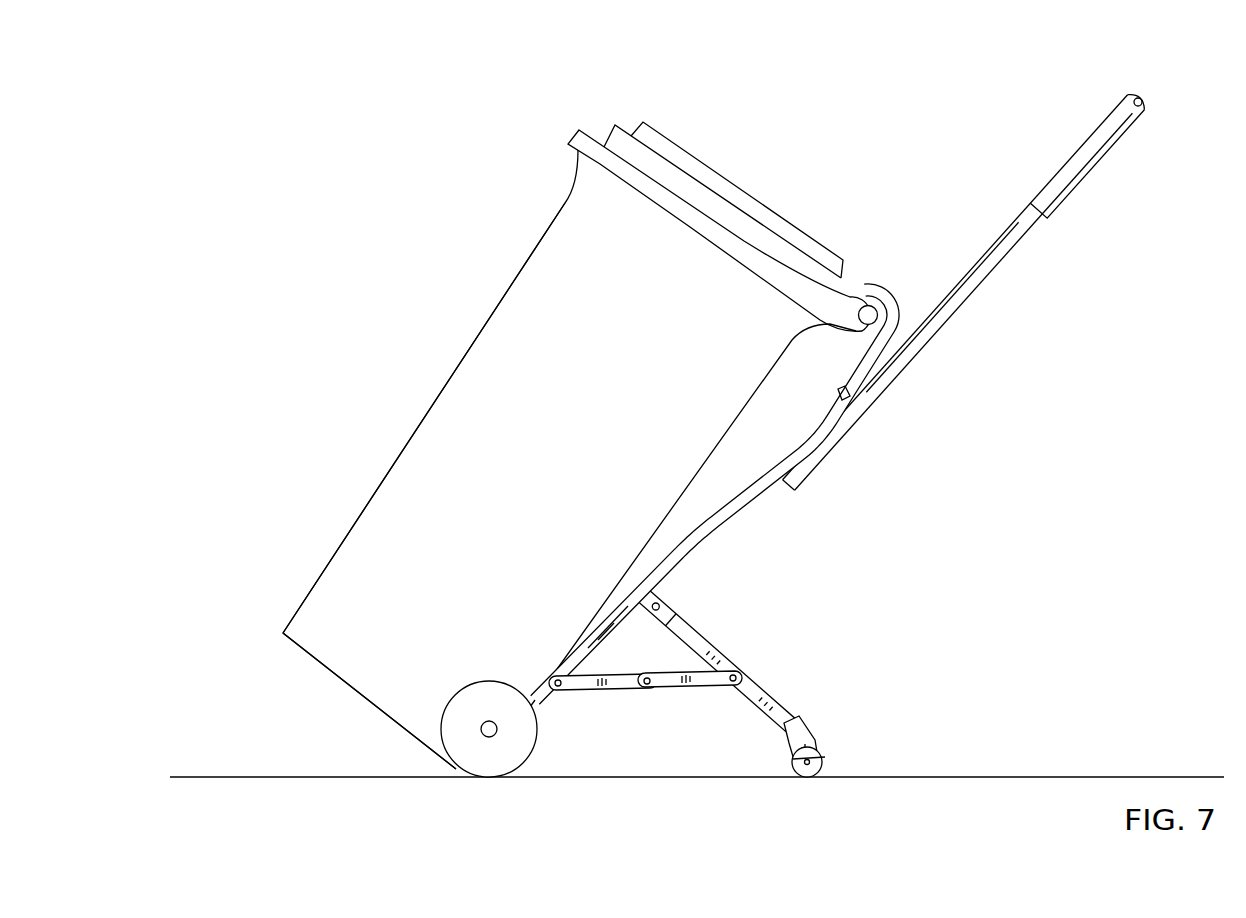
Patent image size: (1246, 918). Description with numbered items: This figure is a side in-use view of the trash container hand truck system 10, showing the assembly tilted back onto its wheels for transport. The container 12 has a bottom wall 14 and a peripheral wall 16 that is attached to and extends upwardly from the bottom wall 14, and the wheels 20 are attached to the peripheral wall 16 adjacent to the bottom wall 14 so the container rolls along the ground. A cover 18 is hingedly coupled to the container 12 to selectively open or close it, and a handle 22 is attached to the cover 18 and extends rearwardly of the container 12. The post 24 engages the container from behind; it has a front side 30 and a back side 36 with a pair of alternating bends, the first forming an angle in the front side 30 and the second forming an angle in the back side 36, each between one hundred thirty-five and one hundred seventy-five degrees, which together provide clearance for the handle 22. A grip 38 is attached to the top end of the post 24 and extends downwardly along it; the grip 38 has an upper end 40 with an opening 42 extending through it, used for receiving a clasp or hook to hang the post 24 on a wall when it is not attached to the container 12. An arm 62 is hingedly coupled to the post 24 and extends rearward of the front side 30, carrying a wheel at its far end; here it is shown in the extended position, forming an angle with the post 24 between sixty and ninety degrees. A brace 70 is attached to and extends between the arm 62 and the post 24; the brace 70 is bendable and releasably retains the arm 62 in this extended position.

The trash container hand truck system 10 is at (270, 548).
The container 12 is at (283, 633).
The bottom wall 14 is at (350, 688).
The peripheral wall 16 is at (416, 426).
The cover 18 is at (731, 182).
The wheels 20 is at (527, 760).
The handle 22 is at (868, 315).
The post 24 is at (727, 522).
The front side 30 is at (773, 477).
The back side 36 is at (841, 437).
The grip 38 is at (1068, 198).
The upper end 40 is at (1150, 98).
The opening 42 is at (1142, 111).
The arm 62 is at (791, 713).
The brace 70 is at (678, 690).